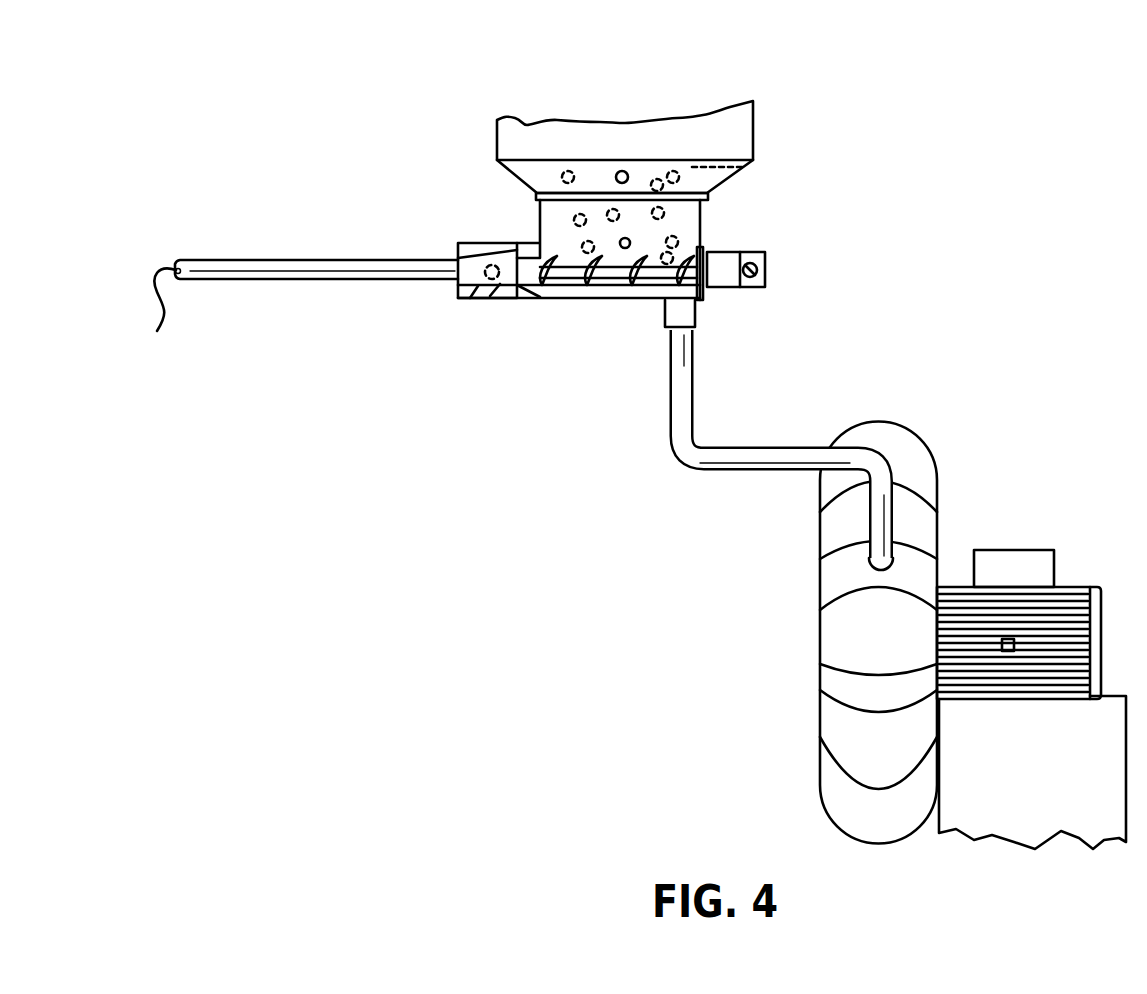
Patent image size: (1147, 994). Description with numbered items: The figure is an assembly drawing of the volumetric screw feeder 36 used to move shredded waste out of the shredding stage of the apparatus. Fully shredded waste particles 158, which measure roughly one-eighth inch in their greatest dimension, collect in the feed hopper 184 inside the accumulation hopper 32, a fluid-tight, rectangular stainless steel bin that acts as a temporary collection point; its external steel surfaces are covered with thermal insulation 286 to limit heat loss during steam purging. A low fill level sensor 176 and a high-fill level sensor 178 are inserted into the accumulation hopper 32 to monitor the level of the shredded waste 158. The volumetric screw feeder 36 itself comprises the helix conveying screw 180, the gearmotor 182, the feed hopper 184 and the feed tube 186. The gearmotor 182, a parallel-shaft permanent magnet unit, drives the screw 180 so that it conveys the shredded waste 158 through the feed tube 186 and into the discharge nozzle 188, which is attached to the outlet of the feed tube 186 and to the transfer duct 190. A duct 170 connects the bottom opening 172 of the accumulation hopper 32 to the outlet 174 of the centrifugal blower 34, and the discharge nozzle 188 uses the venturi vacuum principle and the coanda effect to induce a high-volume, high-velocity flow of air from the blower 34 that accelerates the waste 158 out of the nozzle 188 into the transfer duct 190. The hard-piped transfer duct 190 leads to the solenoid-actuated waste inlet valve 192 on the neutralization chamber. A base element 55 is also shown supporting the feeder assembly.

The volumetric screw feeder 36 is at (731, 84).
The high-fill level sensor 178 is at (618, 172).
The shredded waste particles 158 is at (768, 149).
The thermal insulation 286 is at (737, 176).
The accumulation hopper 32 is at (688, 223).
The feed hopper 184 is at (575, 247).
The low fill level sensor 176 is at (625, 249).
The helix conveying screw 180 is at (561, 278).
The feed tube 186 is at (473, 244).
The base plate 55 is at (461, 300).
The discharge nozzle 188 is at (505, 283).
The transfer duct 190 is at (258, 263).
The waste inlet valve 192 is at (139, 308).
The gearmotor 182 is at (728, 282).
The centrifugal blower 34 is at (900, 425).
The duct 170 is at (812, 452).
The outlet 174 is at (882, 518).
The bottom opening 172 is at (680, 316).